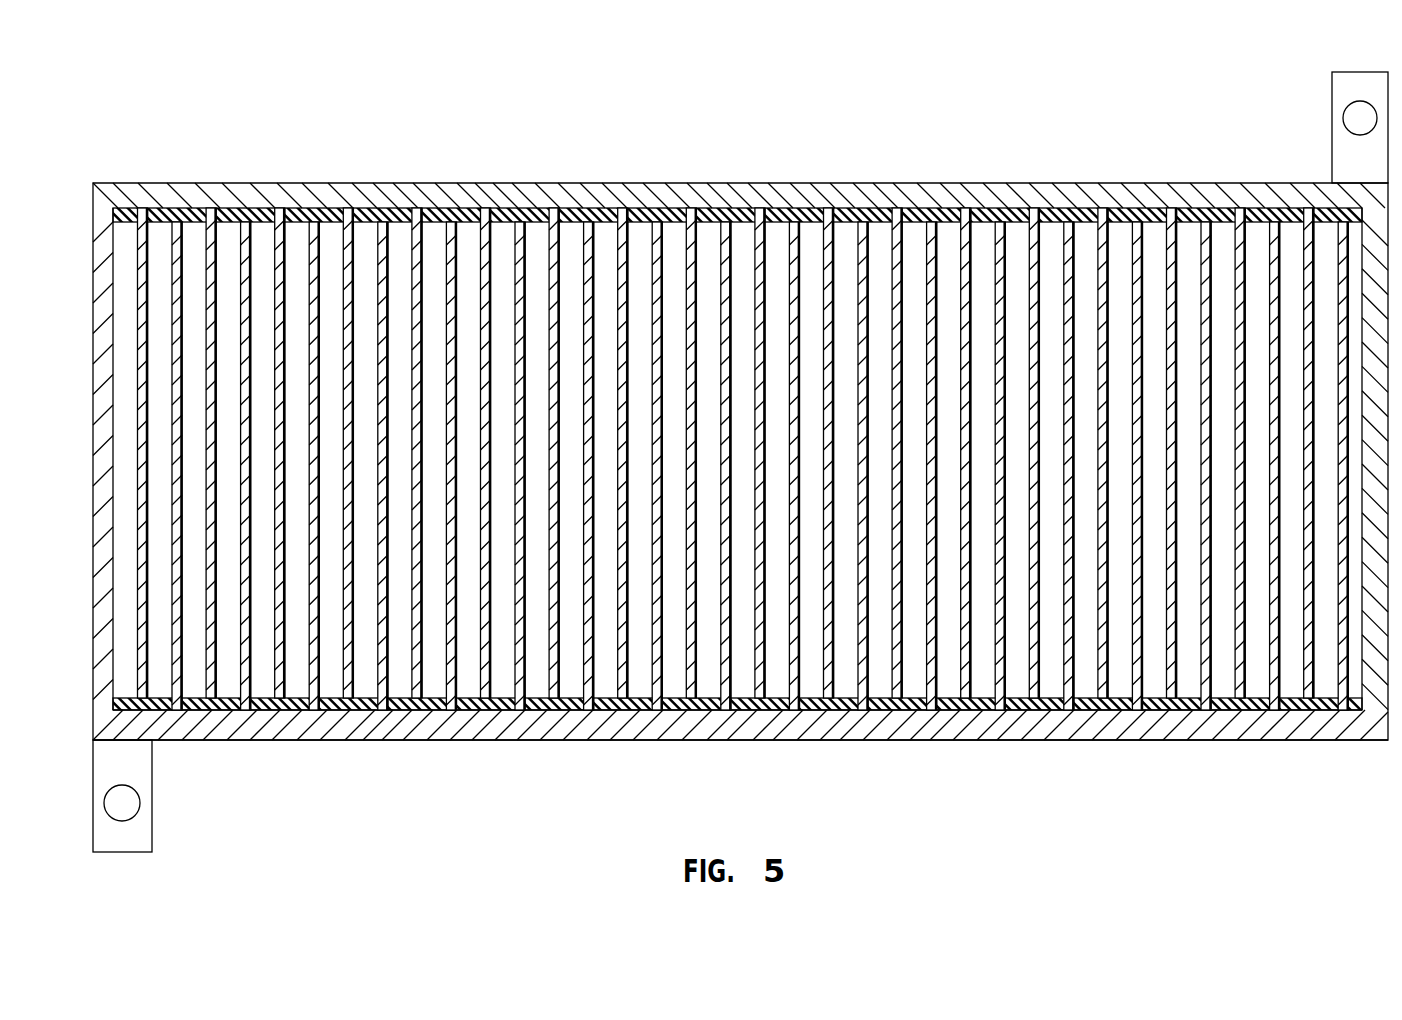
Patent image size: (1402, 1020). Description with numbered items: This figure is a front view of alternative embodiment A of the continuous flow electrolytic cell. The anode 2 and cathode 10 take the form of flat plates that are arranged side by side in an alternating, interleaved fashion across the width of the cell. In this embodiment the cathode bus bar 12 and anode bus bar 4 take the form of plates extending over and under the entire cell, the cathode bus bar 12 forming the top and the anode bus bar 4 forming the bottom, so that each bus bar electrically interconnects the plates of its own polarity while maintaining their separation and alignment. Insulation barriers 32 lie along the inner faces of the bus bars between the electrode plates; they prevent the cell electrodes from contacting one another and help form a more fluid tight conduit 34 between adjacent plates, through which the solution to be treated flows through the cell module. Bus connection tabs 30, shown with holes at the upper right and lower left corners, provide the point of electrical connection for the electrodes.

The anode 2 is at (450, 660).
The anode bus bar 4 is at (663, 737).
The cathode 10 is at (827, 660).
The cathode bus bar 12 is at (643, 193).
The bus connection tab 30 is at (1343, 117).
The insulation barrier 32 is at (1080, 210).
The fluid tight conduit 34 is at (438, 243).